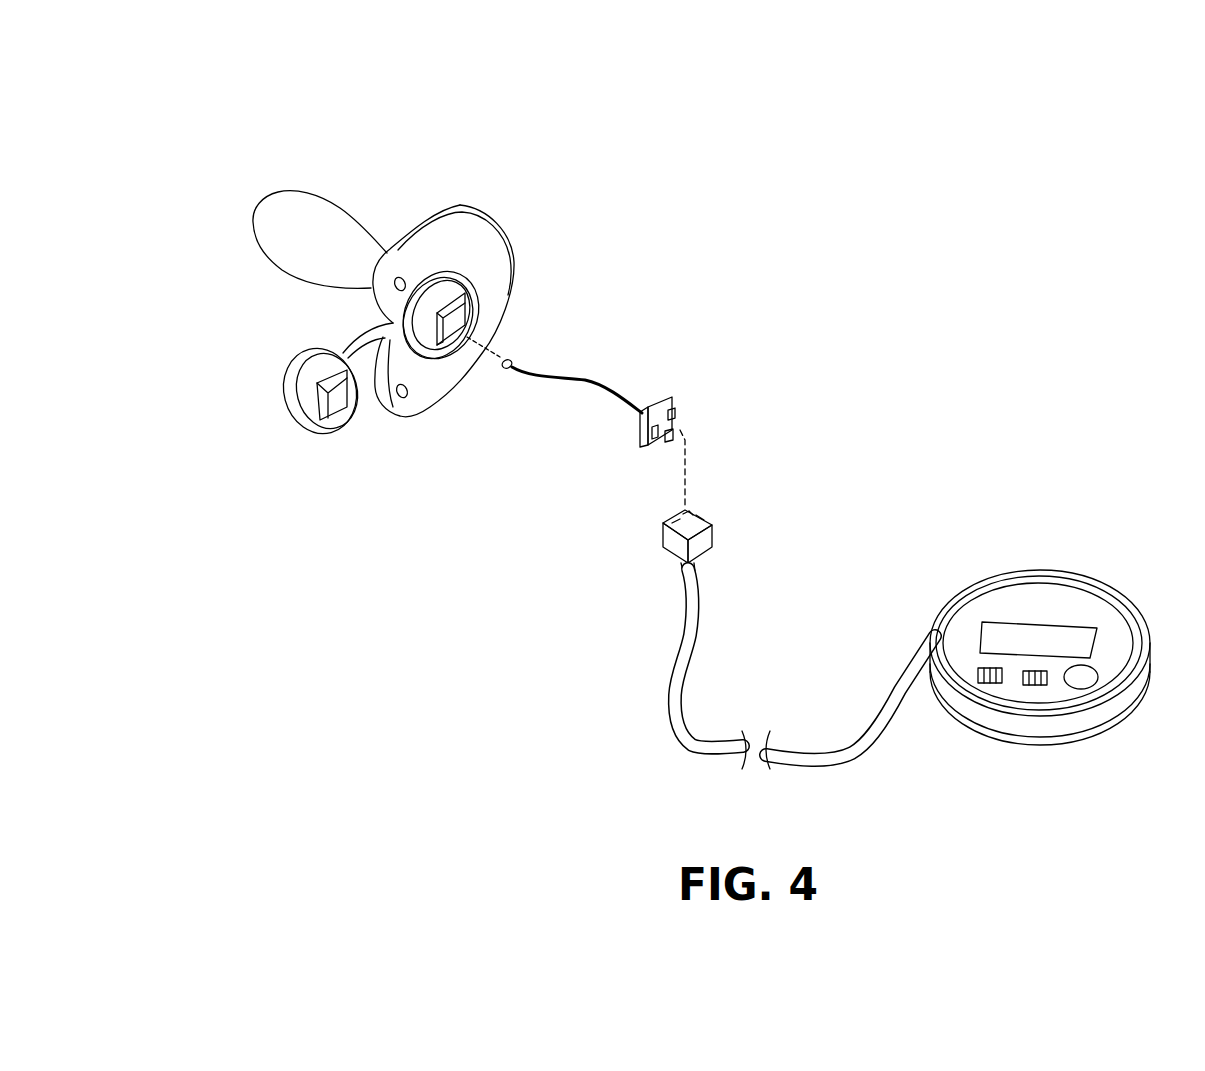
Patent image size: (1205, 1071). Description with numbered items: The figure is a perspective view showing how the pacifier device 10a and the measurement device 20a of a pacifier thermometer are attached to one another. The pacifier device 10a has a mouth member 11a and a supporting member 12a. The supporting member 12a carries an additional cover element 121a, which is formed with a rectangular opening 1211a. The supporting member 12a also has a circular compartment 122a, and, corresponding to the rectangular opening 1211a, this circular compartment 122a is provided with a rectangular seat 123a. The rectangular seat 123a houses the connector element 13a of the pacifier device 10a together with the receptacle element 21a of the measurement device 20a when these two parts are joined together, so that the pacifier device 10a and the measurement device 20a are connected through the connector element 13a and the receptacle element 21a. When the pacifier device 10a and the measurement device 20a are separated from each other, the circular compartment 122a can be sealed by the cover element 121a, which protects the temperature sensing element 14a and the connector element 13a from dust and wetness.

The pacifier device 10a is at (436, 188).
The mouth member 11a is at (290, 207).
The supporting member 12a is at (434, 393).
The cover element 121a is at (298, 406).
The rectangular opening 1211a is at (327, 407).
The circular compartment 122a is at (396, 390).
The rectangular seat 123a is at (458, 281).
The connector element 13a is at (658, 400).
The temperature sensing element 14a is at (505, 372).
The measurement device 20a is at (1046, 548).
The receptacle element 21a is at (672, 542).